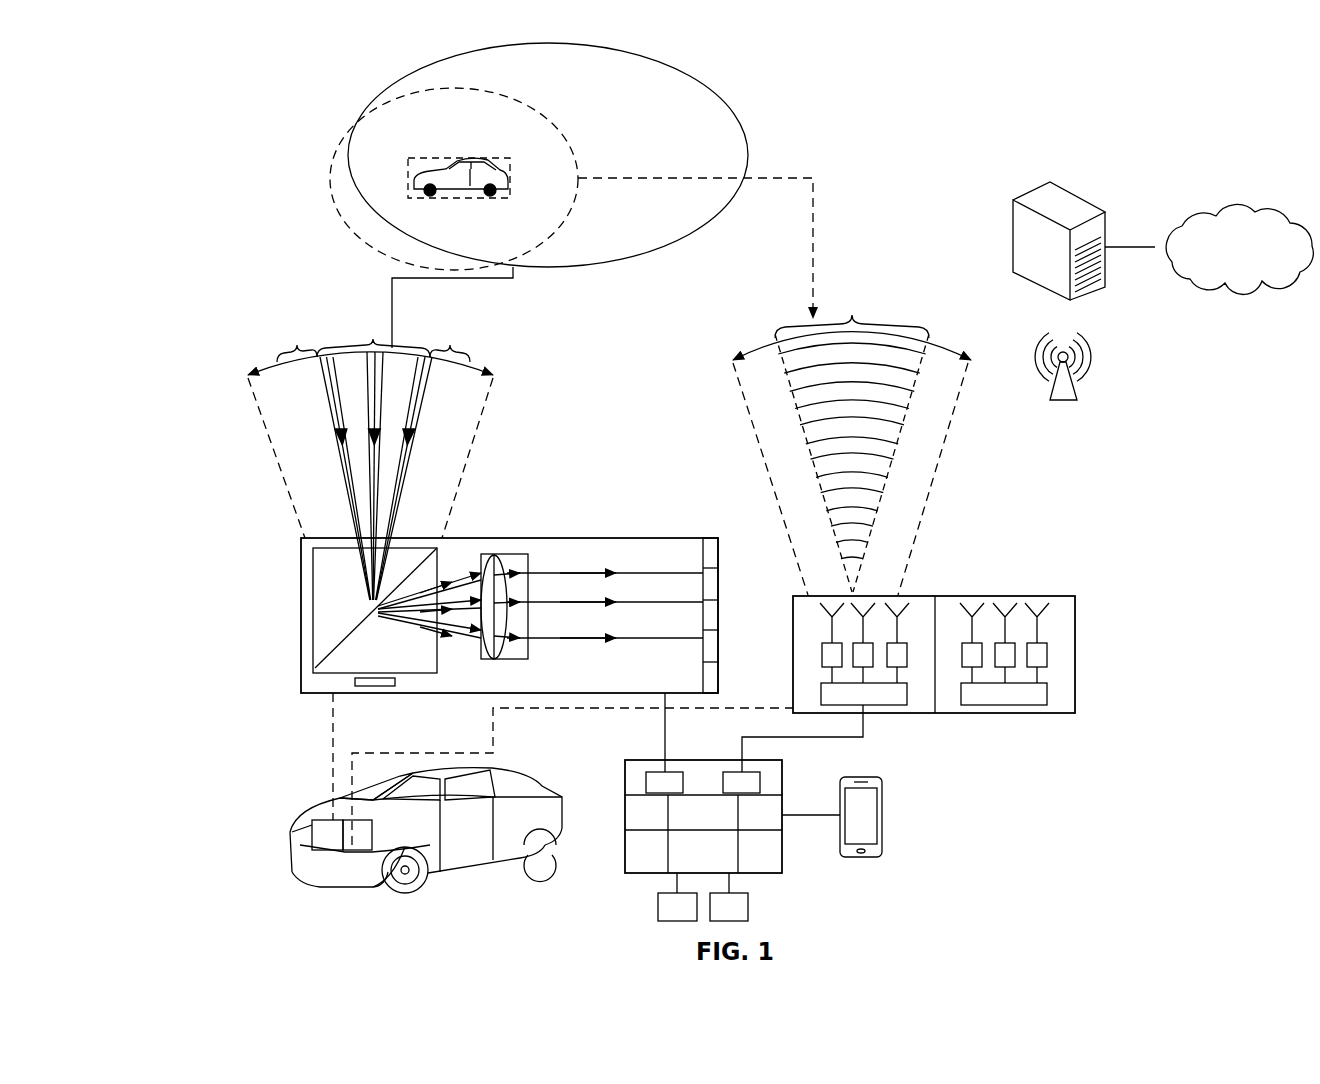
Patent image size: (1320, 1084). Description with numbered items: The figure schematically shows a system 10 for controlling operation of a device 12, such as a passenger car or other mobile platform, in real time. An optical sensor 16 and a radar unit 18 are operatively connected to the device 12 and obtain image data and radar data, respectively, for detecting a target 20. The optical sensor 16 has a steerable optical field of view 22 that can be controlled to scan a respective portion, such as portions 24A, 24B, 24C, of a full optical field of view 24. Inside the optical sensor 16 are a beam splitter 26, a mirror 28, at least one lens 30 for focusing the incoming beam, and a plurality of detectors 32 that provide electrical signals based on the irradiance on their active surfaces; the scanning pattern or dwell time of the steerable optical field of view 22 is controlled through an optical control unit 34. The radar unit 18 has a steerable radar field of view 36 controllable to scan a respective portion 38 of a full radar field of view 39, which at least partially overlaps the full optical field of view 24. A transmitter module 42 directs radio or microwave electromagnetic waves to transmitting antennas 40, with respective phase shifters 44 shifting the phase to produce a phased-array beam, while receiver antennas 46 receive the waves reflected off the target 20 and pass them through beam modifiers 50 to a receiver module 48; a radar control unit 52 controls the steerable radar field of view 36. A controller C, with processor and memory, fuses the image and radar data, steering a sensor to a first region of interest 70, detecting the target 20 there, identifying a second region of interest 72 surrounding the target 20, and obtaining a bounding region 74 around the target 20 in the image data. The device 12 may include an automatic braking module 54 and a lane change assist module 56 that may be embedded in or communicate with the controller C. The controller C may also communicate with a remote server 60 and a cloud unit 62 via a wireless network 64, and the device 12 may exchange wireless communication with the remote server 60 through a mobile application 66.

The system 10 is at (854, 231).
The device 12 is at (283, 773).
The optical sensor 16 is at (611, 508).
The radar unit 18 is at (966, 556).
The target 20 is at (463, 165).
The steerable optical field of view 22 is at (214, 356).
The full optical field of view 24 is at (292, 370).
The portion of full optical field of view 24A is at (277, 358).
The portion of full optical field of view 24B is at (372, 342).
The portion of full optical field of view 24C is at (468, 358).
The beam splitter 26 is at (338, 641).
The mirror 28 is at (388, 691).
The lens 30 is at (495, 548).
The detectors 32 is at (709, 536).
The optical control unit 34 is at (646, 783).
The steerable radar field of view 36 is at (935, 326).
The portion of full radar field of view 38 is at (853, 320).
The full radar field of view 39 is at (945, 353).
The transmitting antennas 40 is at (1043, 605).
The transmitter module 42 is at (1048, 696).
The phase shifters 44 is at (1048, 657).
The receiver antennas 46 is at (811, 617).
The receiver module 48 is at (882, 706).
The beam modifiers 50 is at (822, 655).
The radar control unit 52 is at (760, 786).
The automatic braking module 54 is at (658, 906).
The lane change assist module 56 is at (748, 906).
The remote server 60 is at (1081, 188).
The cloud unit 62 is at (1238, 201).
The wireless network 64 is at (1086, 388).
The mobile application 66 is at (883, 816).
The first region of interest 70 is at (657, 255).
The second region of interest 72 is at (330, 186).
The bounding region 74 is at (403, 171).
The controller C is at (822, 869).